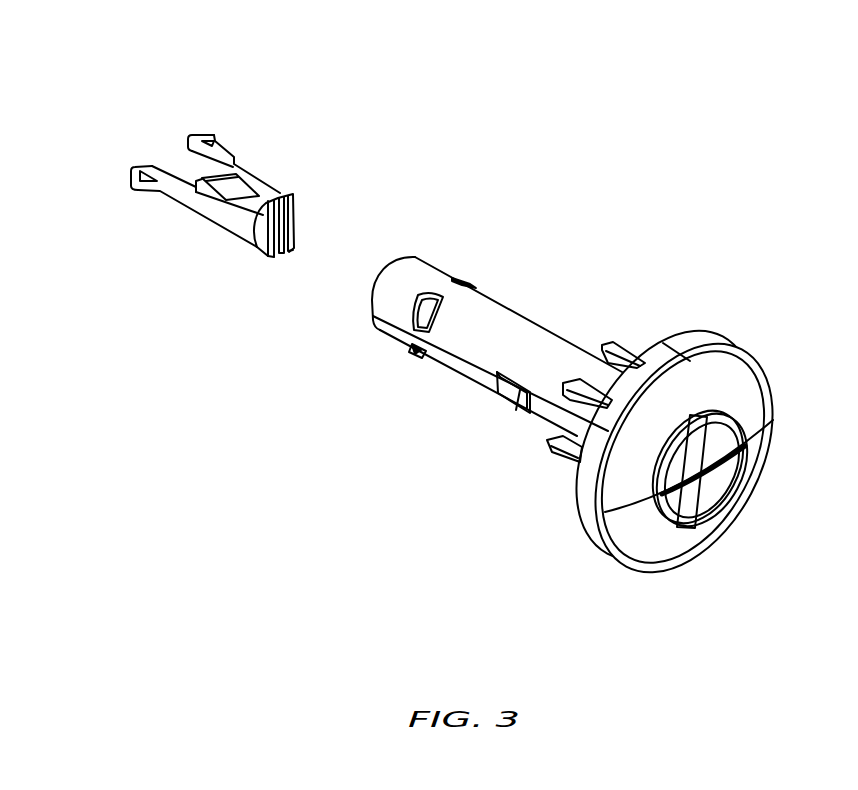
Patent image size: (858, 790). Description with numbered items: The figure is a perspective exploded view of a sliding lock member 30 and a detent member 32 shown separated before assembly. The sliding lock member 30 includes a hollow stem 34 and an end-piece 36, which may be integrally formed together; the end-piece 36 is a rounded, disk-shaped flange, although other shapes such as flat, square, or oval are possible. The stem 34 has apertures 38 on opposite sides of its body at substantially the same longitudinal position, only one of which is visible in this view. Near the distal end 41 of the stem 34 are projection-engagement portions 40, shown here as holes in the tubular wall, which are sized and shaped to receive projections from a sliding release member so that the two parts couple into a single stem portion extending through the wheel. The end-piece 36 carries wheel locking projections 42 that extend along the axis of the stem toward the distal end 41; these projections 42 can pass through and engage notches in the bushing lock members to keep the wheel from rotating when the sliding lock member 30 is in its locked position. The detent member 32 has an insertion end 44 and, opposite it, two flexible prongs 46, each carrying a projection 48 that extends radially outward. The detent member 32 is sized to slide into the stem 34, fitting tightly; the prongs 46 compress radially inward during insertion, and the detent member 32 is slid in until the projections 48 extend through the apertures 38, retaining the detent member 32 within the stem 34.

The sliding lock member 30 is at (644, 266).
The detent member 32 is at (312, 130).
The hollow stem 34 is at (499, 324).
The end-piece 36 is at (756, 384).
The apertures 38 is at (516, 410).
The projection-engagement portions 40 is at (423, 355).
The distal end 41 is at (402, 262).
The wheel locking projections 42 is at (560, 463).
The insertion end 44 is at (267, 240).
The flexible prongs 46 is at (221, 160).
The projection 48 is at (136, 166).